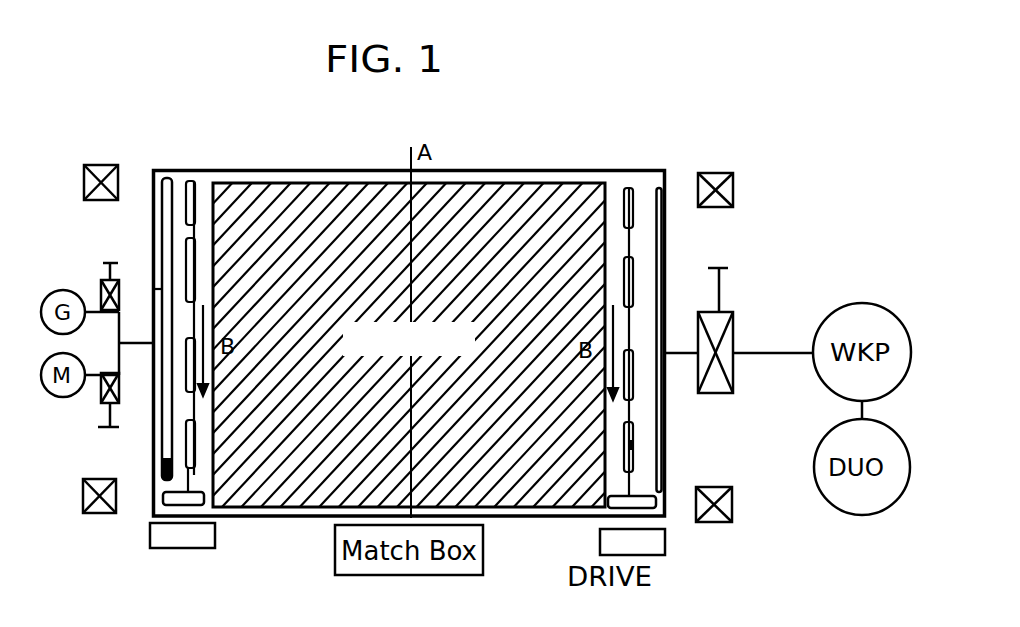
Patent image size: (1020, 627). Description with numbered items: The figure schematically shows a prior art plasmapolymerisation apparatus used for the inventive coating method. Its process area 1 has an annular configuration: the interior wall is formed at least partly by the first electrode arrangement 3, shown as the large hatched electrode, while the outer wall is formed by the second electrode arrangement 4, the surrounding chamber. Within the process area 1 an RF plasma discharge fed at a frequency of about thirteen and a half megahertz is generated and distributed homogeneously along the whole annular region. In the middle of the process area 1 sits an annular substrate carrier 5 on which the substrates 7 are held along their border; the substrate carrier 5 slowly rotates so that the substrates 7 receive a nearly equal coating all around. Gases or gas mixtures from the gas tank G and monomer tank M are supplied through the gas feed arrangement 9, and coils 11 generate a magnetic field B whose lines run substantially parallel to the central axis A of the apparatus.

The process area 1 is at (618, 187).
The first electrode arrangement 3 is at (605, 233).
The second electrode arrangement 4 is at (665, 236).
The substrate carrier 5 is at (632, 482).
The substrates 7 is at (632, 443).
The gas feed arrangement 9 is at (155, 205).
The coils 11 is at (732, 503).